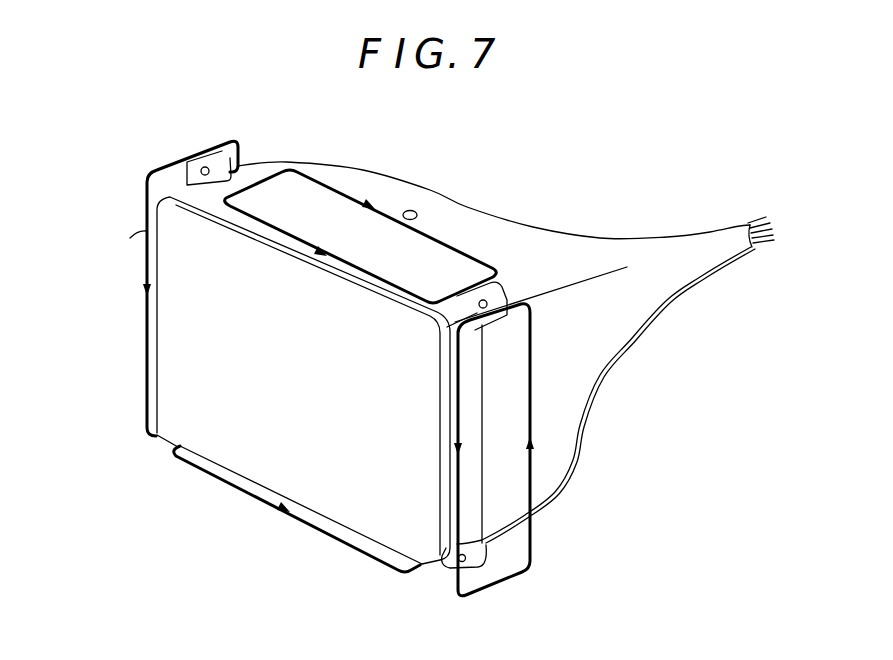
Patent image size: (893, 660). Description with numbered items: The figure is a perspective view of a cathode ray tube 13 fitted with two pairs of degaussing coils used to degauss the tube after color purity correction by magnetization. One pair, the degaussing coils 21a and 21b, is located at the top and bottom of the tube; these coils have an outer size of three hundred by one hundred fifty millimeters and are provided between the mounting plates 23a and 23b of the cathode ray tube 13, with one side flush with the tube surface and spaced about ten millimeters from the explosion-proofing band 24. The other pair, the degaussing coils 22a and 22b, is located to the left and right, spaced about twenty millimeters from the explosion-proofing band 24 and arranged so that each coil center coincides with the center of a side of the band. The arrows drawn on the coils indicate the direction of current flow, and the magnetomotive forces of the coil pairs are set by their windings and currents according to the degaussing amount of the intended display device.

The cathode ray tube 13 is at (538, 224).
The degaussing coil 21a is at (350, 190).
The degaussing coil 21b is at (318, 531).
The degaussing coil 22a is at (533, 557).
The degaussing coil 22b is at (146, 236).
The mounting plate 23a is at (240, 153).
The mounting plate 23b is at (497, 327).
The explosion-proofing band 24 is at (473, 503).